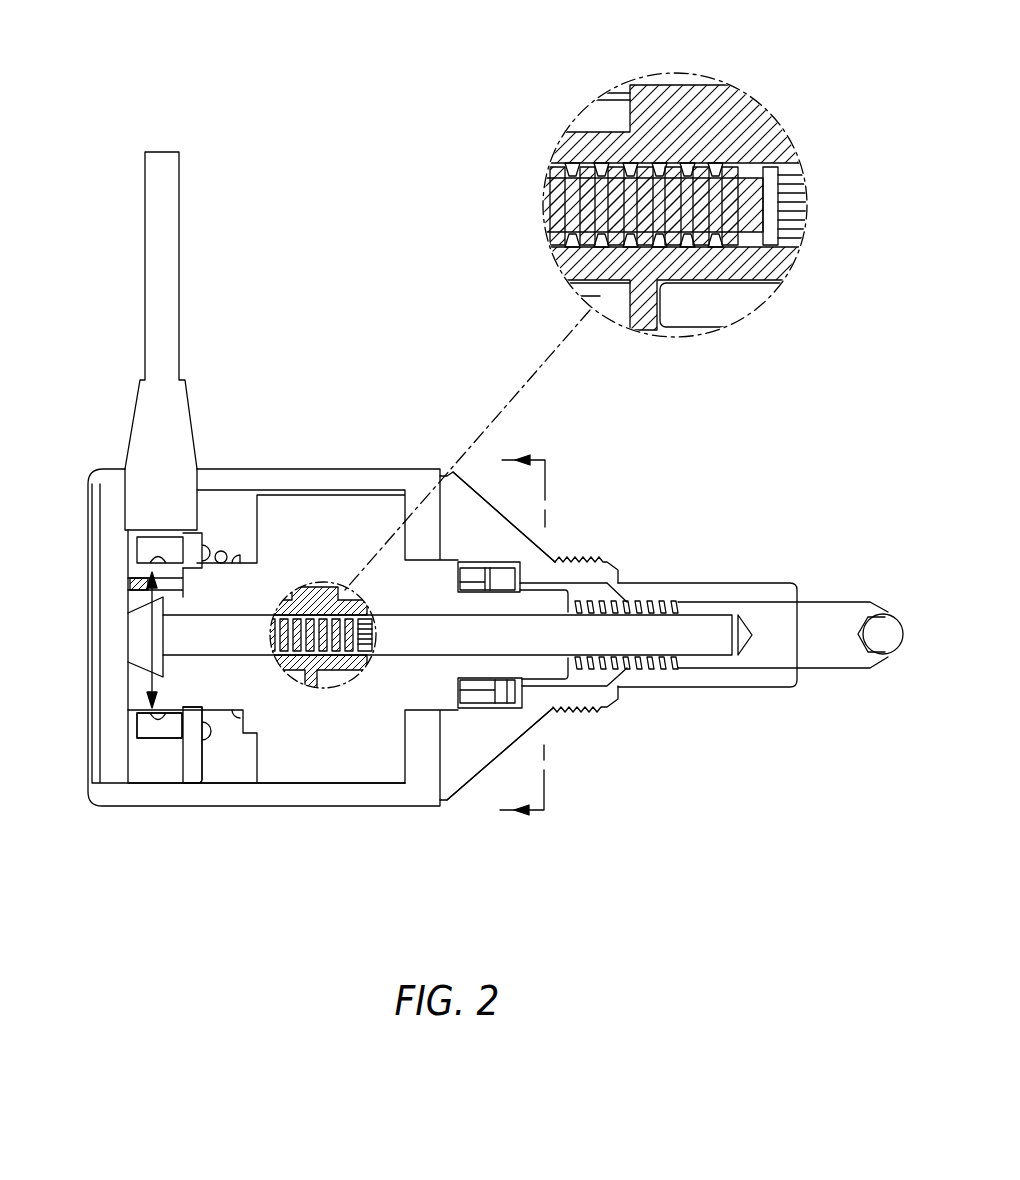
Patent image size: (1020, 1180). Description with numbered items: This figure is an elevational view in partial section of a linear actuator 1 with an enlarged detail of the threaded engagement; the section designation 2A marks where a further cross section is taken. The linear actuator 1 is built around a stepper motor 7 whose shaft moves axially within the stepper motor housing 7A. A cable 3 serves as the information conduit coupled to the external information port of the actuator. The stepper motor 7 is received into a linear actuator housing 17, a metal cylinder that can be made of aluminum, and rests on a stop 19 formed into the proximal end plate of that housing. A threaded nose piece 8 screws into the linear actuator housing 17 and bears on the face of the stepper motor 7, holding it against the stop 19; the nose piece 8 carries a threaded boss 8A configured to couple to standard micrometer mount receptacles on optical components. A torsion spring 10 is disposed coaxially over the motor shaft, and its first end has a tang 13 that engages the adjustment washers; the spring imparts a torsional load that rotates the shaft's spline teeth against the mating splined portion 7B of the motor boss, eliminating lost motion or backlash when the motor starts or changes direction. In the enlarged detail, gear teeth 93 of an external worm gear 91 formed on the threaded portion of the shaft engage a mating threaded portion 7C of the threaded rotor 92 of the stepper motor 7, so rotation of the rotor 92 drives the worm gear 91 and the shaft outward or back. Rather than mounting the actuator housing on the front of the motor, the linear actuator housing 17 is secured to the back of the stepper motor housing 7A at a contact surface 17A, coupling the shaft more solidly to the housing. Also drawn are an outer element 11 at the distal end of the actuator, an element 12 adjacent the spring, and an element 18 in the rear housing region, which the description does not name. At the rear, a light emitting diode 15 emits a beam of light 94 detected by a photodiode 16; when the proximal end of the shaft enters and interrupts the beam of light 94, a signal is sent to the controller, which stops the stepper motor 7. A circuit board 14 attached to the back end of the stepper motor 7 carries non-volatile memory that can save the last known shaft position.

The linear actuator 1 is at (253, 897).
The cable 3 is at (180, 203).
The stepper motor 7 is at (347, 510).
The stepper motor housing 7A is at (293, 767).
The splined portion 7B is at (558, 673).
The threaded portion 7C is at (676, 170).
The nose piece 8 is at (473, 495).
The threaded boss 8A is at (595, 558).
The torsion spring 10 is at (627, 603).
The outer tube 11 is at (821, 610).
The spring seat 12 is at (508, 692).
The tang 13 is at (477, 693).
The circuit board 14 is at (192, 767).
The light emitting diode 15 is at (153, 730).
The photodiode 16 is at (147, 548).
The linear actuator housing 17 is at (287, 480).
The contact surface 17A is at (150, 580).
The retainer 18 is at (252, 518).
The stop 19 is at (208, 502).
The worm gear 91 is at (743, 178).
The threaded rotor 92 is at (770, 267).
The gear teeth 93 is at (717, 170).
The beam of light 94 is at (150, 642).
The section line 2A is at (539, 635).